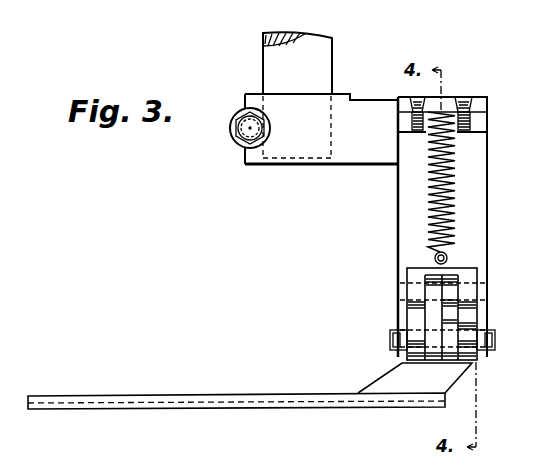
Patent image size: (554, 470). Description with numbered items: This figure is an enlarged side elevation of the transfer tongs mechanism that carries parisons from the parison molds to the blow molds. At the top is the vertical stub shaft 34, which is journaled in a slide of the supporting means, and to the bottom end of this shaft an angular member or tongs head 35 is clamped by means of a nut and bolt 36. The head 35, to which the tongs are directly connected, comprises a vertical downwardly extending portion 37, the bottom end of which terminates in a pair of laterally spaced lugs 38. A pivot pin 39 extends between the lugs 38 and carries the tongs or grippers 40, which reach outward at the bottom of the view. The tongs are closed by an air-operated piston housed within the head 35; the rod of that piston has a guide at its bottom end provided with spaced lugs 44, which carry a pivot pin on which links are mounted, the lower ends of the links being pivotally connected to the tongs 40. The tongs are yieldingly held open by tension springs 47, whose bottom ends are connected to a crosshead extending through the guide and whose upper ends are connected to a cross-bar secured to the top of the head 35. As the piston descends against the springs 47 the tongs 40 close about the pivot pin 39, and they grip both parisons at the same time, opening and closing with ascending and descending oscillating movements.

The vertical stub shaft 34 is at (320, 63).
The tongs head 35 is at (360, 153).
The nut and bolt 36 is at (230, 127).
The vertical downwardly extending portion 37 is at (478, 228).
The lugs 38 is at (483, 312).
The pivot pin 39 is at (497, 340).
The tongs 40 is at (228, 400).
The spaced lugs 44 is at (465, 281).
The tension springs 47 is at (455, 196).